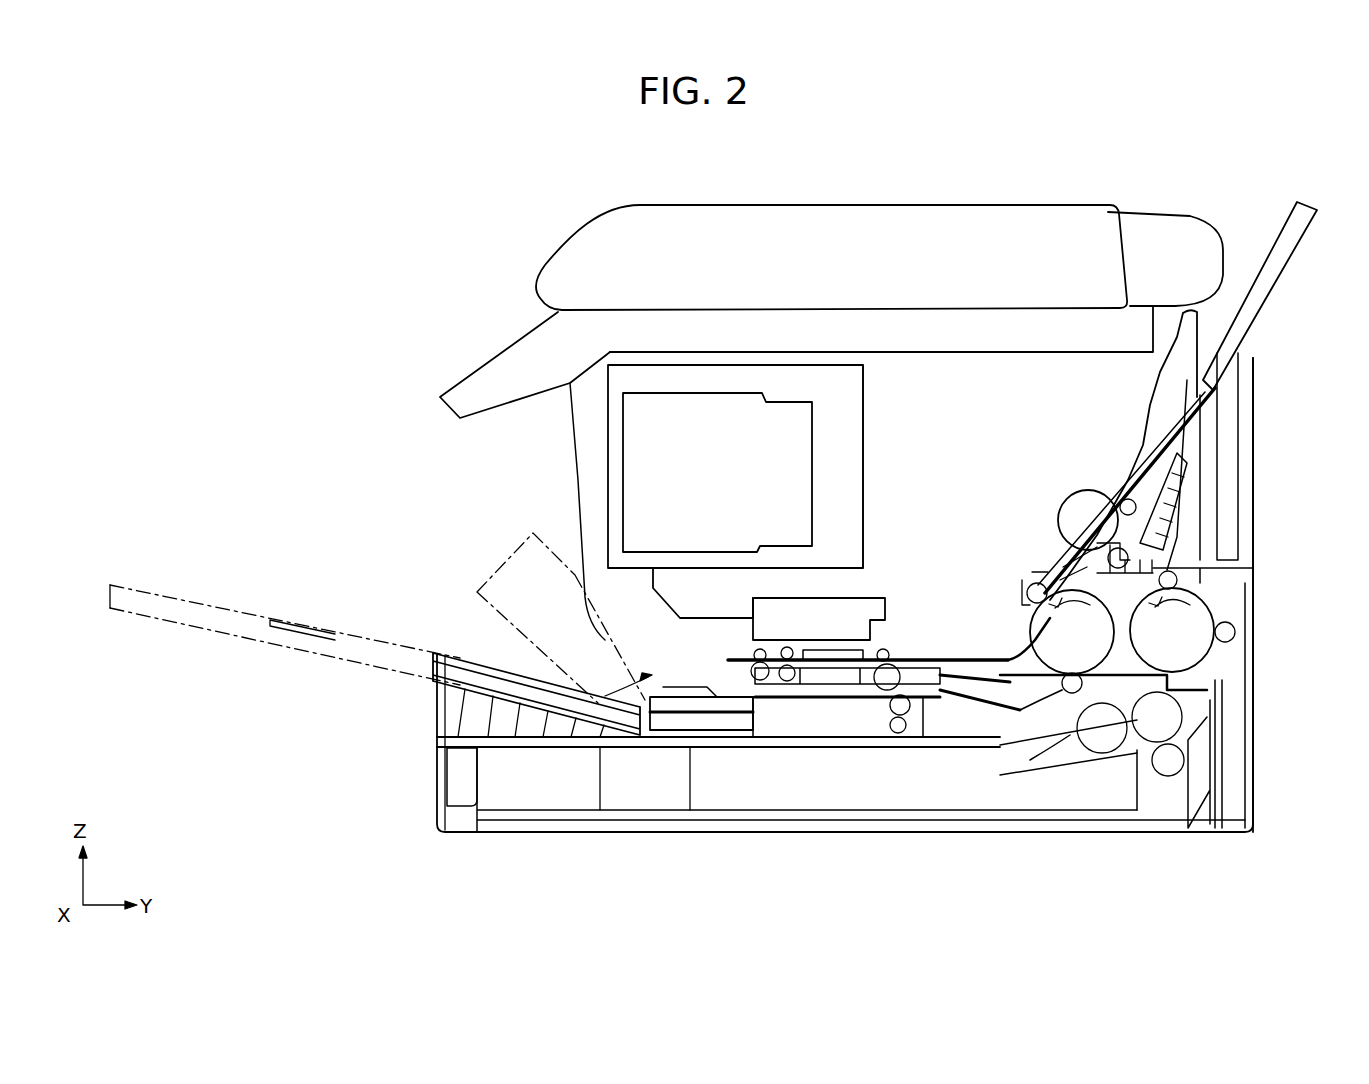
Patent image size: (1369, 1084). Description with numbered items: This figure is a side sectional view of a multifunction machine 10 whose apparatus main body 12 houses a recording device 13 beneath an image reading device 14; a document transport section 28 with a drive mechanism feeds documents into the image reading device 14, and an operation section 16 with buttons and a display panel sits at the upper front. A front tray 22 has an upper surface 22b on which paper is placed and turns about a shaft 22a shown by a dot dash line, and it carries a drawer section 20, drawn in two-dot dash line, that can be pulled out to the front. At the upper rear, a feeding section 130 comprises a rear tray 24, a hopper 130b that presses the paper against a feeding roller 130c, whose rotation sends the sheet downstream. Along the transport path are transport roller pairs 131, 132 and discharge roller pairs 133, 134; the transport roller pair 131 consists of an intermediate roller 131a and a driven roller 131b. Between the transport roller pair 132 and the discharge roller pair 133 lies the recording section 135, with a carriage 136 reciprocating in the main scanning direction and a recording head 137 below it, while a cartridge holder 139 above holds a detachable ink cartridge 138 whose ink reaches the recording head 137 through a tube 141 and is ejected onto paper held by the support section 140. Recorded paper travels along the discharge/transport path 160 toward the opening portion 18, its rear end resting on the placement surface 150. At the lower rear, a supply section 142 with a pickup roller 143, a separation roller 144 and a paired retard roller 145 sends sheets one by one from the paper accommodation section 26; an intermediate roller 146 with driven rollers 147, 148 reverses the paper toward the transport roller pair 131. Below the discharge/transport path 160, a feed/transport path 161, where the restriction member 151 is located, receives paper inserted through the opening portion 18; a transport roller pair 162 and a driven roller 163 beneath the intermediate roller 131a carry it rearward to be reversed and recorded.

The multifunction machine 10 is at (1286, 355).
The apparatus main body 12 is at (1255, 630).
The recording device 13 is at (1255, 599).
The image reading device 14 is at (942, 337).
The operation section 16 is at (502, 355).
The opening portion 18 is at (592, 747).
The drawer section 20 is at (228, 598).
The front tray 22 is at (478, 570).
The shaft 22a is at (480, 820).
The upper surface 22b is at (453, 652).
The rear tray 24 is at (1275, 245).
The paper accommodation section 26 is at (440, 803).
The document transport section 28 is at (838, 205).
The feeding section 130 is at (1133, 431).
The hopper 130b is at (1130, 498).
The feeding roller 130c is at (1060, 505).
The transport roller pair 131 is at (1021, 582).
The intermediate roller 131a is at (1025, 640).
The driven roller 131b is at (1020, 590).
The transport roller pair 132 is at (886, 650).
The discharge roller pair 133 is at (787, 685).
The discharge roller pair 134 is at (750, 654).
The recording section 135 is at (877, 573).
The carriage 136 is at (835, 598).
The recording head 137 is at (832, 650).
The ink cartridge 138 is at (623, 470).
The cartridge holder 139 is at (607, 417).
The support section 140 is at (848, 737).
The tube 141 is at (639, 670).
The supply section 142 is at (1236, 688).
The pickup roller 143 is at (1050, 747).
The separation roller 144 is at (1110, 775).
The retard roller 145 is at (1140, 770).
The intermediate roller 146 is at (1225, 585).
The driven roller 147 is at (1236, 636).
The driven roller 148 is at (1200, 540).
The placement surface 150 is at (740, 727).
The restriction member 151 is at (700, 737).
The discharge/transport path 160 is at (782, 640).
The feed/transport path 161 is at (768, 737).
The transport roller pair 162 is at (905, 735).
The driven roller 163 is at (1070, 695).